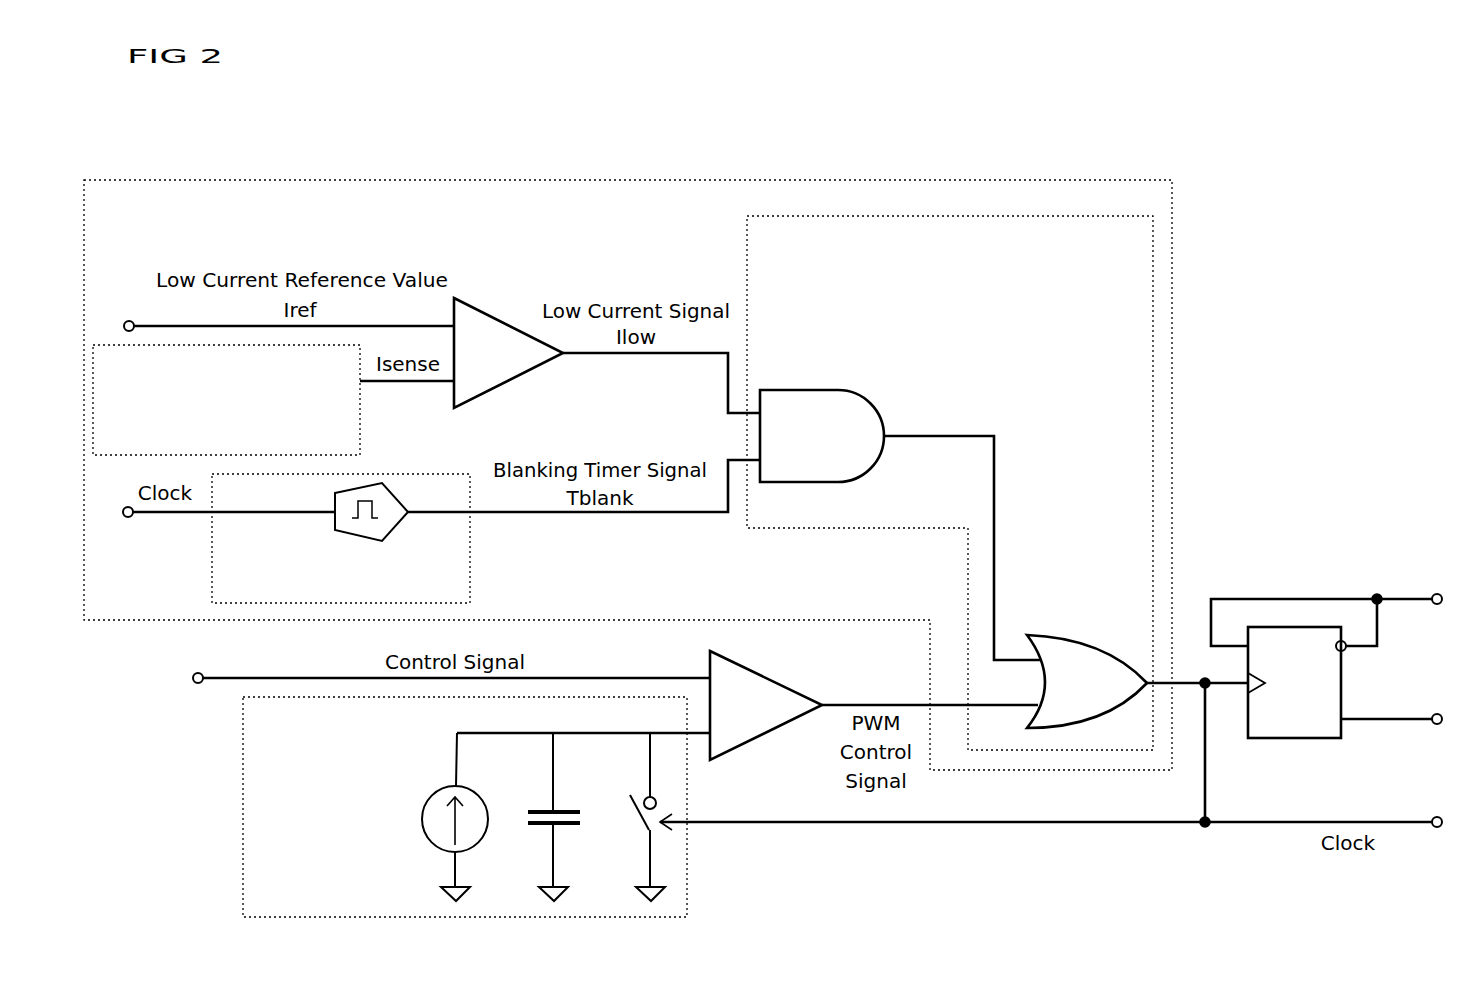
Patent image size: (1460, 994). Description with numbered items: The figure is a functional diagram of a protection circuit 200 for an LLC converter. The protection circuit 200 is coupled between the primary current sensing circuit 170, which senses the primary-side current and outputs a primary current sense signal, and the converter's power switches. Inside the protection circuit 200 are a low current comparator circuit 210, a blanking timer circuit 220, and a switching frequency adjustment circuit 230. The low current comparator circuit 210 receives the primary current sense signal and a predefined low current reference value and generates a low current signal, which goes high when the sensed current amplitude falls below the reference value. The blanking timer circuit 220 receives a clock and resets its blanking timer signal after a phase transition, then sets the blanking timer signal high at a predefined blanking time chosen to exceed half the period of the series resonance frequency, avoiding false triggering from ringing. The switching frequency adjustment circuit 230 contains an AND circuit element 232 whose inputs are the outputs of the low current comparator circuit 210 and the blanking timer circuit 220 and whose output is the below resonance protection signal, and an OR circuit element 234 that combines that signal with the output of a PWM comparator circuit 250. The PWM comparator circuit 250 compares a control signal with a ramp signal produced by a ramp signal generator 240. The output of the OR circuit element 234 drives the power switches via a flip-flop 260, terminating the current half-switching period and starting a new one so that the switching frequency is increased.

The protection circuit 200 is at (309, 213).
The primary current sensing circuit 170 is at (208, 376).
The low current comparator circuit 210 is at (478, 351).
The blanking timer circuit 220 is at (322, 563).
The switching frequency adjustment circuit 230 is at (931, 250).
The AND circuit element 232 is at (794, 434).
The OR circuit element 234 is at (1062, 679).
The ramp signal generator 240 is at (252, 731).
The PWM comparator circuit 250 is at (730, 699).
The flip-flop 260 is at (1332, 679).